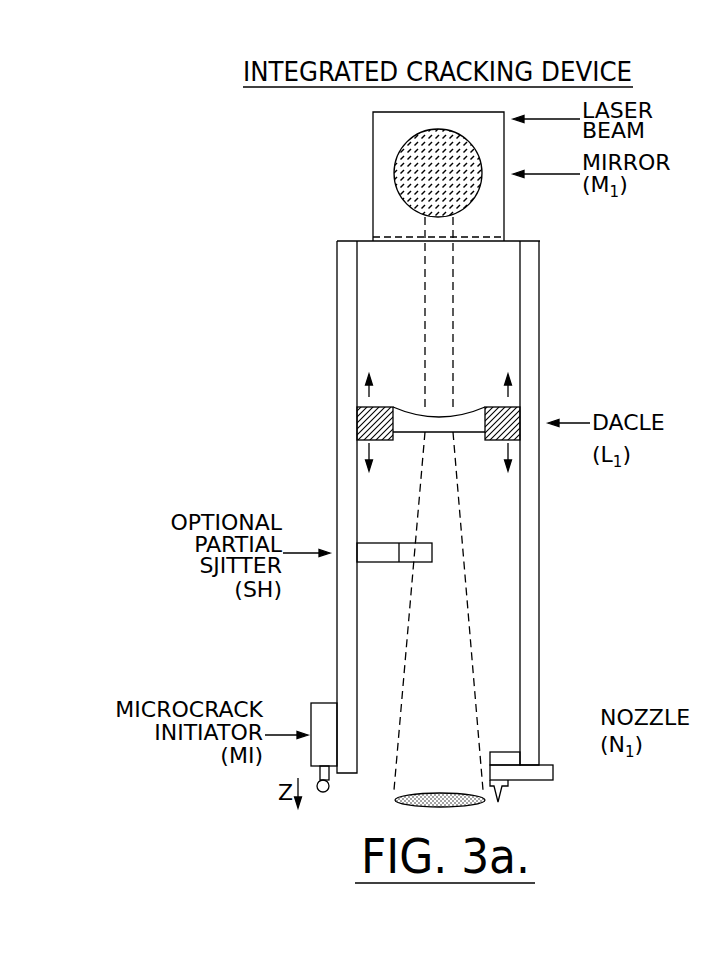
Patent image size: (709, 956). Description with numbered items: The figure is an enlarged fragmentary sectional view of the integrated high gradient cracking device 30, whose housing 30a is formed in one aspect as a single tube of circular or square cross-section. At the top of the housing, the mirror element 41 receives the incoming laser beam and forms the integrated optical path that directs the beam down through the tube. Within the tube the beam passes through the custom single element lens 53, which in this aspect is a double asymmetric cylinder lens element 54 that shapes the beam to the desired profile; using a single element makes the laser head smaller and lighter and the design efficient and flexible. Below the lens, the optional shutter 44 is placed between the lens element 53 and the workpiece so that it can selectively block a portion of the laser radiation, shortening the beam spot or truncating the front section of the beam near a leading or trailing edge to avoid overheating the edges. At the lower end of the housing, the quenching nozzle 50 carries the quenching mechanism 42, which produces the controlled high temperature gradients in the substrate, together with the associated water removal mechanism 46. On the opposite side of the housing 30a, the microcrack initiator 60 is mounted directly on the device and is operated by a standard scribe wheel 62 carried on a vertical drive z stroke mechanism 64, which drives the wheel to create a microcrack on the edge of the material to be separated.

The integrated cracking device 30 is at (396, 176).
The housing 30a is at (532, 570).
The mirror element 41 is at (412, 158).
The optional shutter 44 is at (380, 542).
The single element lens 53 is at (477, 408).
The double asymmetric cylinder lens element 54 is at (522, 413).
The quenching nozzle 50 is at (502, 753).
The water removal mechanism 46 is at (542, 775).
The quenching mechanism 42 is at (525, 788).
The microcrack initiator 60 is at (329, 760).
The scribe wheel 62 is at (320, 792).
The z stroke mechanism 64 is at (317, 770).